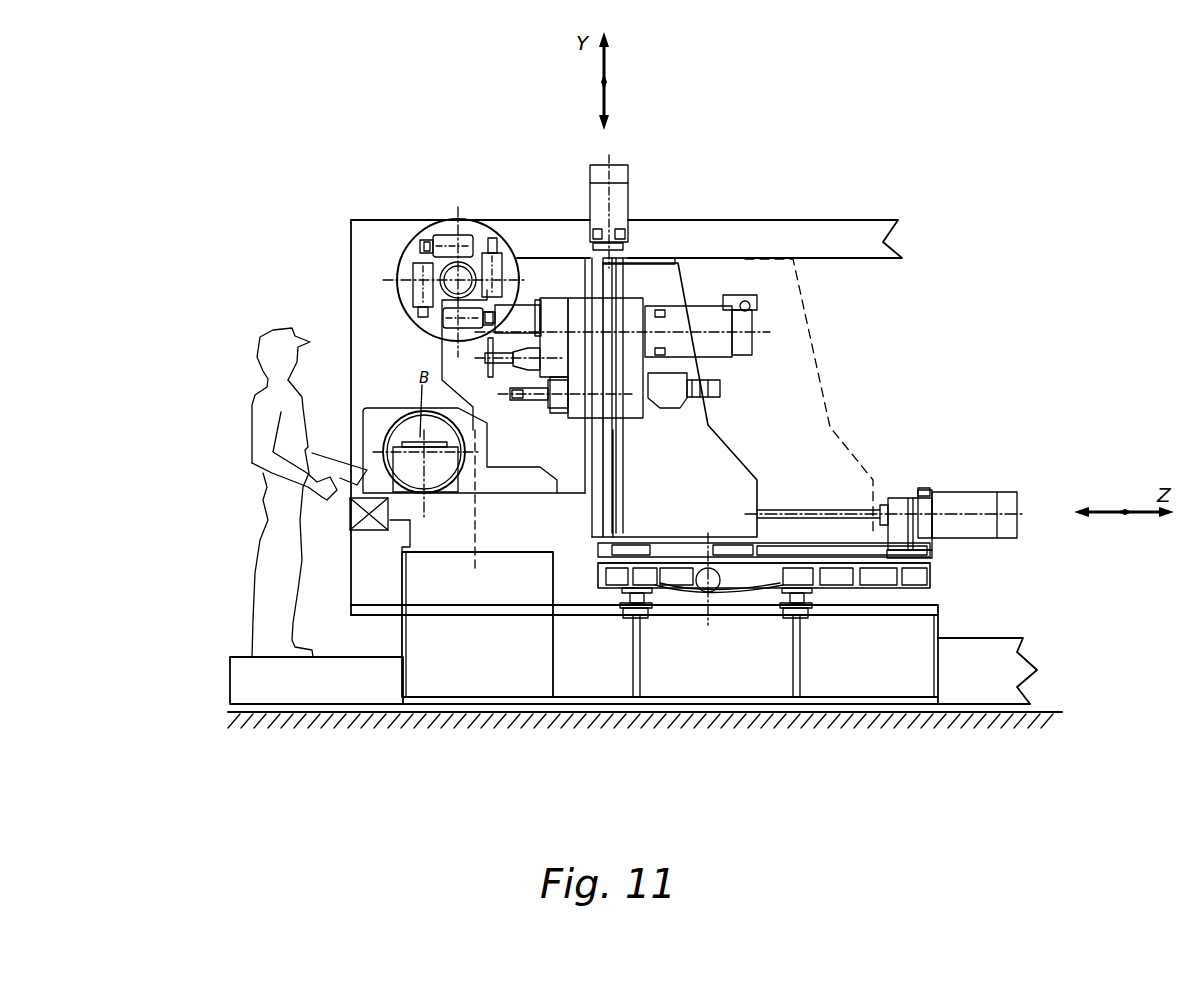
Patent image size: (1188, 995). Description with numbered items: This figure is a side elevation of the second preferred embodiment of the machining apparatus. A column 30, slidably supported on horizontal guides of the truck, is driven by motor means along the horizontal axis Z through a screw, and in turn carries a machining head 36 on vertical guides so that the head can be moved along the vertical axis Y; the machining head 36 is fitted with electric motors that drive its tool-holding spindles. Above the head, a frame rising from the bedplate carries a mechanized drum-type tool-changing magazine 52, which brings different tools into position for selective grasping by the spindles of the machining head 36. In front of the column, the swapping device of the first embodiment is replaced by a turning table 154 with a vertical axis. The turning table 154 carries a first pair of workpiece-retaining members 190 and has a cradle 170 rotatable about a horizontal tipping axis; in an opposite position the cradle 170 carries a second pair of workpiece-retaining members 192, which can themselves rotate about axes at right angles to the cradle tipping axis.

The column 30 is at (682, 462).
The machining head 36 is at (567, 343).
The mechanized tool-changing magazine 52 is at (482, 228).
The turning table 154 is at (408, 468).
The cradle 170 is at (350, 512).
The first pair of workpiece-retaining members 190 is at (520, 473).
The second pair of workpiece-retaining members 192 is at (417, 437).